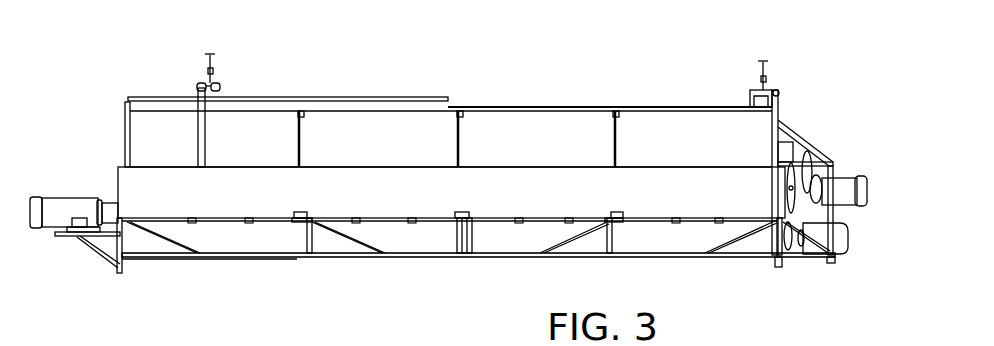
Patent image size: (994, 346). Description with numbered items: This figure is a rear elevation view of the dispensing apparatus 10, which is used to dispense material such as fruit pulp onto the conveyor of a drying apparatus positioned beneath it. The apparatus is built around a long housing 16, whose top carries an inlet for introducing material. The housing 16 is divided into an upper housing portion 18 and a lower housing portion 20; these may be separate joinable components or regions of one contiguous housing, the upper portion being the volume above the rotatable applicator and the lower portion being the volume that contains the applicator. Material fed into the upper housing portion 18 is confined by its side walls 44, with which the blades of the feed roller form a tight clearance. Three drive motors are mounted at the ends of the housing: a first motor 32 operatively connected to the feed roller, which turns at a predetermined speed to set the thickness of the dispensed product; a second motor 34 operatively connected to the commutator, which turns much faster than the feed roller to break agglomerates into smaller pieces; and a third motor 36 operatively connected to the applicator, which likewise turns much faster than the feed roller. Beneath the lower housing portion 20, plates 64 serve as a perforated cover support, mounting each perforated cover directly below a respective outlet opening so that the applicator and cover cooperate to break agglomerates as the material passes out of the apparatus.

The dispensing apparatus 10 is at (599, 88).
The housing 16 is at (522, 113).
The upper housing portion 18 is at (392, 132).
The lower housing portion 20 is at (661, 247).
The first motor 32 is at (850, 187).
The second motor 34 is at (55, 205).
The third motor 36 is at (838, 240).
The side walls 44 is at (676, 145).
The plates 64 is at (440, 257).